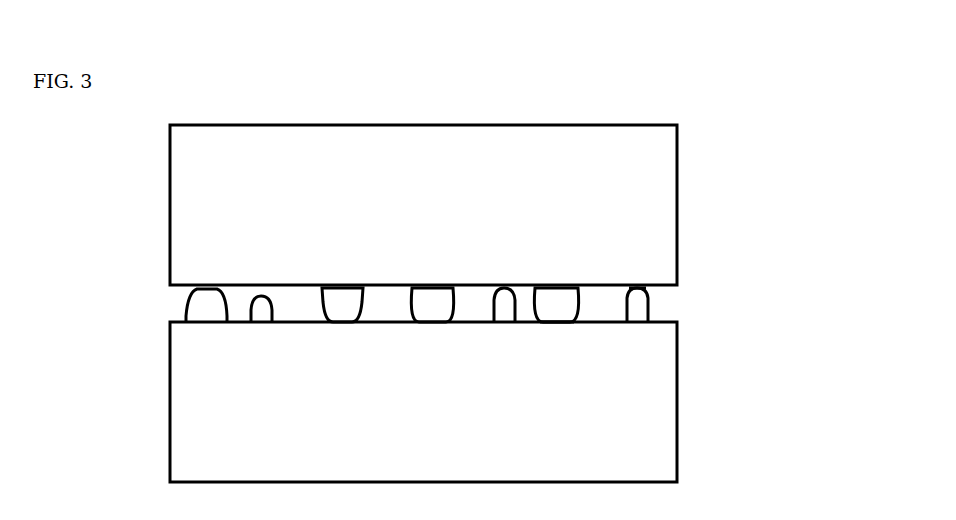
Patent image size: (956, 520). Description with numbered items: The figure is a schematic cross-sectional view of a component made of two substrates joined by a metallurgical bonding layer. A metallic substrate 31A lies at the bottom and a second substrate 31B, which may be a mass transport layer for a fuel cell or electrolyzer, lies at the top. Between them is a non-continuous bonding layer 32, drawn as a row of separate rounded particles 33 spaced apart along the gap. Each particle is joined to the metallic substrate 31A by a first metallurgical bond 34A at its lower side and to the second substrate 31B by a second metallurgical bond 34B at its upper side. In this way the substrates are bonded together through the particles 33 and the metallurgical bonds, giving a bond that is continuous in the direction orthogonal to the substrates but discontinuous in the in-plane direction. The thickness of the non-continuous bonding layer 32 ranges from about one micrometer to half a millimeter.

The metallic substrate 31A is at (677, 428).
The second substrate 31B is at (677, 166).
The non-continuous bonding layer 32 is at (690, 306).
The particles 33 is at (648, 309).
The first metallurgical bond 34A is at (575, 324).
The second metallurgical bond 34B is at (641, 287).